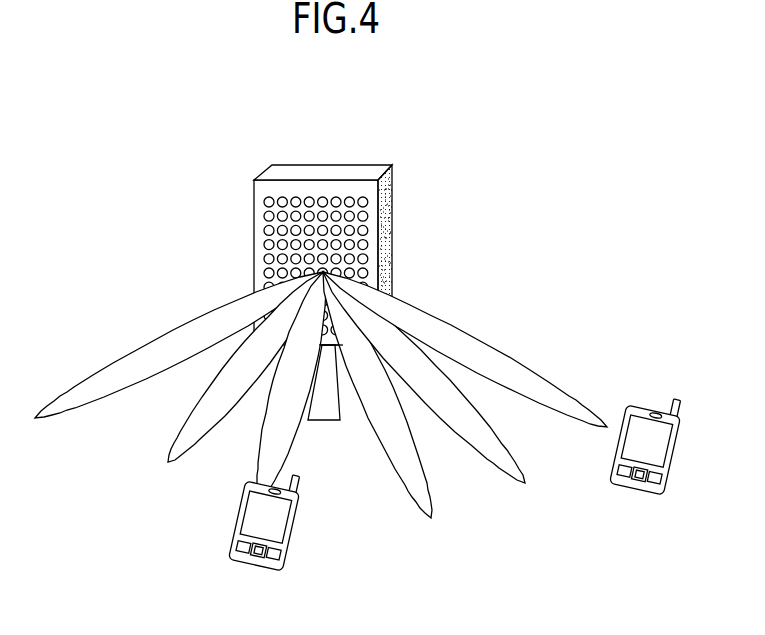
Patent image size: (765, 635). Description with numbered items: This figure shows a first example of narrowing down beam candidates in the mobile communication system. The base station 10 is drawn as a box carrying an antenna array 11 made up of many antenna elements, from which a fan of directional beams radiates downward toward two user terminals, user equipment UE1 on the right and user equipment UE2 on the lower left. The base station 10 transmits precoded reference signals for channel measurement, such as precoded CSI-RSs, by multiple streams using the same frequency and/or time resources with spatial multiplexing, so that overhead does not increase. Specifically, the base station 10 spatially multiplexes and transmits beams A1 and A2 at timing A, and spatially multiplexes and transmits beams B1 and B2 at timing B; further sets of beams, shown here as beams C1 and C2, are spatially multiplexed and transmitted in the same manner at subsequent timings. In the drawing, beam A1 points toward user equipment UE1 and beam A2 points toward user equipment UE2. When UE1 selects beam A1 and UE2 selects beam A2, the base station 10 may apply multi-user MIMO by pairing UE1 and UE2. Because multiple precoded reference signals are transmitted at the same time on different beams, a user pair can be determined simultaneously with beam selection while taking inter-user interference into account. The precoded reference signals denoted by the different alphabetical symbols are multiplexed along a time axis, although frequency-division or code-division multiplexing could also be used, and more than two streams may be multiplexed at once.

The base station 10 is at (323, 219).
The antenna array panel 11 is at (300, 165).
The beam A1 is at (465, 349).
The beam A2 is at (291, 386).
The beam B1 is at (424, 377).
The beam B2 is at (245, 367).
The beam C1 is at (377, 395).
The beam C2 is at (179, 345).
The user equipment 1 UE1 is at (646, 460).
The user equipment 2 UE2 is at (265, 537).